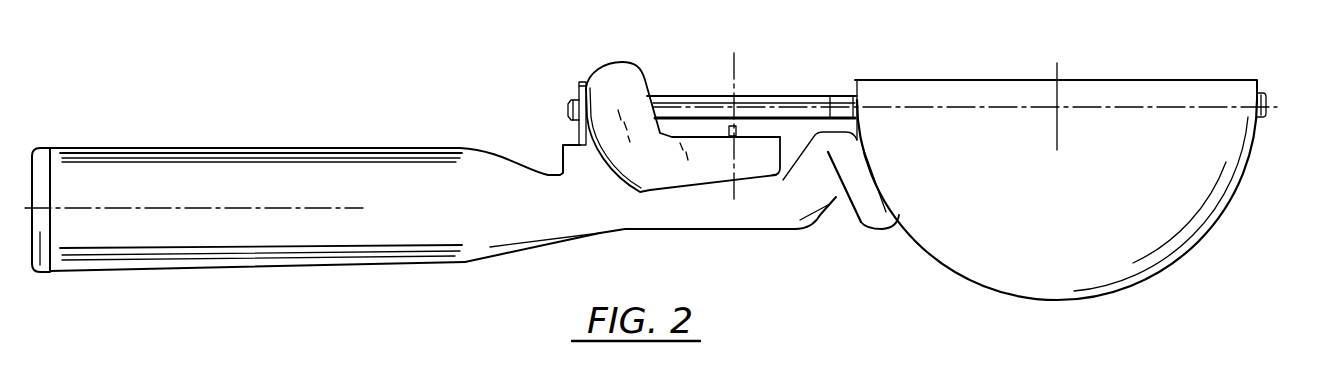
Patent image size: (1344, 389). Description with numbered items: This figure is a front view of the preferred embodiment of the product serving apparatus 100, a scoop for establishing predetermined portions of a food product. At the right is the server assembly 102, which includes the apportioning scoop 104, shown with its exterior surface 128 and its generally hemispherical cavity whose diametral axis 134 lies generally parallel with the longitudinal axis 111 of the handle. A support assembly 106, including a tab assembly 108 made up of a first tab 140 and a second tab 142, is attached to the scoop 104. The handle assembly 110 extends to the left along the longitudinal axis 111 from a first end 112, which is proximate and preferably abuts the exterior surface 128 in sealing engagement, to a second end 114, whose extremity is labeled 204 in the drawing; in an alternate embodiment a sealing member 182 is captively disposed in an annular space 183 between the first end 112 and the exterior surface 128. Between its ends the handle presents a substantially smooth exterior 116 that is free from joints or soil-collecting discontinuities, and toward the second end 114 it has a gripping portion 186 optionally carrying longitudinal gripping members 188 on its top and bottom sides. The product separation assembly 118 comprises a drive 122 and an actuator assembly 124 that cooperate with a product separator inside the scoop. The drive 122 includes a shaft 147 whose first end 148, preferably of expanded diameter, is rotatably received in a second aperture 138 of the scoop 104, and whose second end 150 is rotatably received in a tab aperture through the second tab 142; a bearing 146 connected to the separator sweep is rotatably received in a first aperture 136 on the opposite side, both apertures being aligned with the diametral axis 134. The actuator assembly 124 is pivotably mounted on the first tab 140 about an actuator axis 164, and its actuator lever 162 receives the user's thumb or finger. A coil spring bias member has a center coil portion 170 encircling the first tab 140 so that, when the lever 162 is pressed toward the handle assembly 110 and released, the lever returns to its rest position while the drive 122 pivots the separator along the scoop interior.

The product serving apparatus 100 is at (406, 80).
The server assembly 102 is at (1198, 250).
The apportioning scoop 104 is at (1204, 78).
The support assembly 106 is at (566, 139).
The tab assembly 108 is at (581, 82).
The handle assembly 110 is at (441, 261).
The longitudinal axis 111 is at (278, 207).
The first end 112 is at (868, 228).
The second end 114 is at (65, 273).
The smooth exterior 116 is at (140, 175).
The product separation assembly 118 is at (810, 82).
The drive 122 is at (701, 96).
The actuator assembly 124 is at (655, 190).
The exterior surface 128 is at (1228, 180).
The diametral axis 134 is at (1112, 105).
The first aperture 136 is at (1262, 119).
The second aperture 138 is at (853, 95).
The first tab 140 is at (738, 126).
The second tab 142 is at (578, 86).
The bearing 146 is at (1264, 95).
The shaft 147 is at (664, 96).
The first end 148 is at (839, 96).
The second end 150 is at (568, 100).
The actuator lever 162 is at (618, 105).
The actuator axis 164 is at (733, 197).
The center coil portion 170 is at (780, 178).
The sealing member 182 is at (893, 222).
The annular space 183 is at (880, 226).
The gripping portion 186 is at (177, 267).
The longitudinal gripping members 188 is at (293, 254).
The end cap edge 204 is at (44, 148).